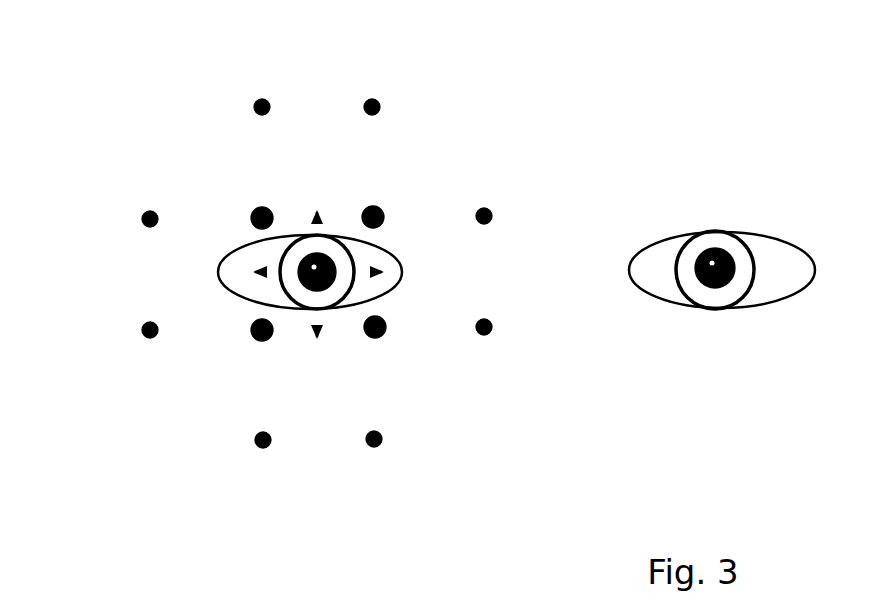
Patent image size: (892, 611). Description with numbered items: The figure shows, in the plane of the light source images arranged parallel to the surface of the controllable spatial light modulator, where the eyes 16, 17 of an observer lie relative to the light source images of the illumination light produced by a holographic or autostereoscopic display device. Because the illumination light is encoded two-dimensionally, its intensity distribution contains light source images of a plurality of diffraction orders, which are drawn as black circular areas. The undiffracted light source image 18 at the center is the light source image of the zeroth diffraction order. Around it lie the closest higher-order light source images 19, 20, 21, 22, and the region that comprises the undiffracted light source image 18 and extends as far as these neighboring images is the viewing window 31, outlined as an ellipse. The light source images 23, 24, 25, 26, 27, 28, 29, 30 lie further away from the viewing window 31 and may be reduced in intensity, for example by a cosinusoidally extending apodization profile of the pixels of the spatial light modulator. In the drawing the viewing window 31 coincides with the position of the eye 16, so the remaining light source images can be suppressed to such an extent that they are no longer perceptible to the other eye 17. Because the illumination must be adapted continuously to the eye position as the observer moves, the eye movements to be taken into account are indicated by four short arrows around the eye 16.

The eye 16 is at (309, 290).
The eye 17 is at (707, 287).
The undiffracted light source image 18 is at (340, 265).
The light source image of higher diffraction order 19 is at (375, 214).
The light source image of higher diffraction order 20 is at (380, 104).
The light source image of higher diffraction order 21 is at (256, 104).
The light source image of higher diffraction order 22 is at (255, 217).
The light source image of diffraction order 23 is at (140, 209).
The light source image of diffraction order 24 is at (143, 330).
The light source image of diffraction order 25 is at (255, 345).
The light source image of diffraction order 26 is at (257, 445).
The light source image of diffraction order 27 is at (380, 444).
The light source image of diffraction order 28 is at (375, 345).
The light source image of diffraction order 29 is at (492, 325).
The light source image of diffraction order 30 is at (492, 214).
The viewing window 31 is at (299, 221).